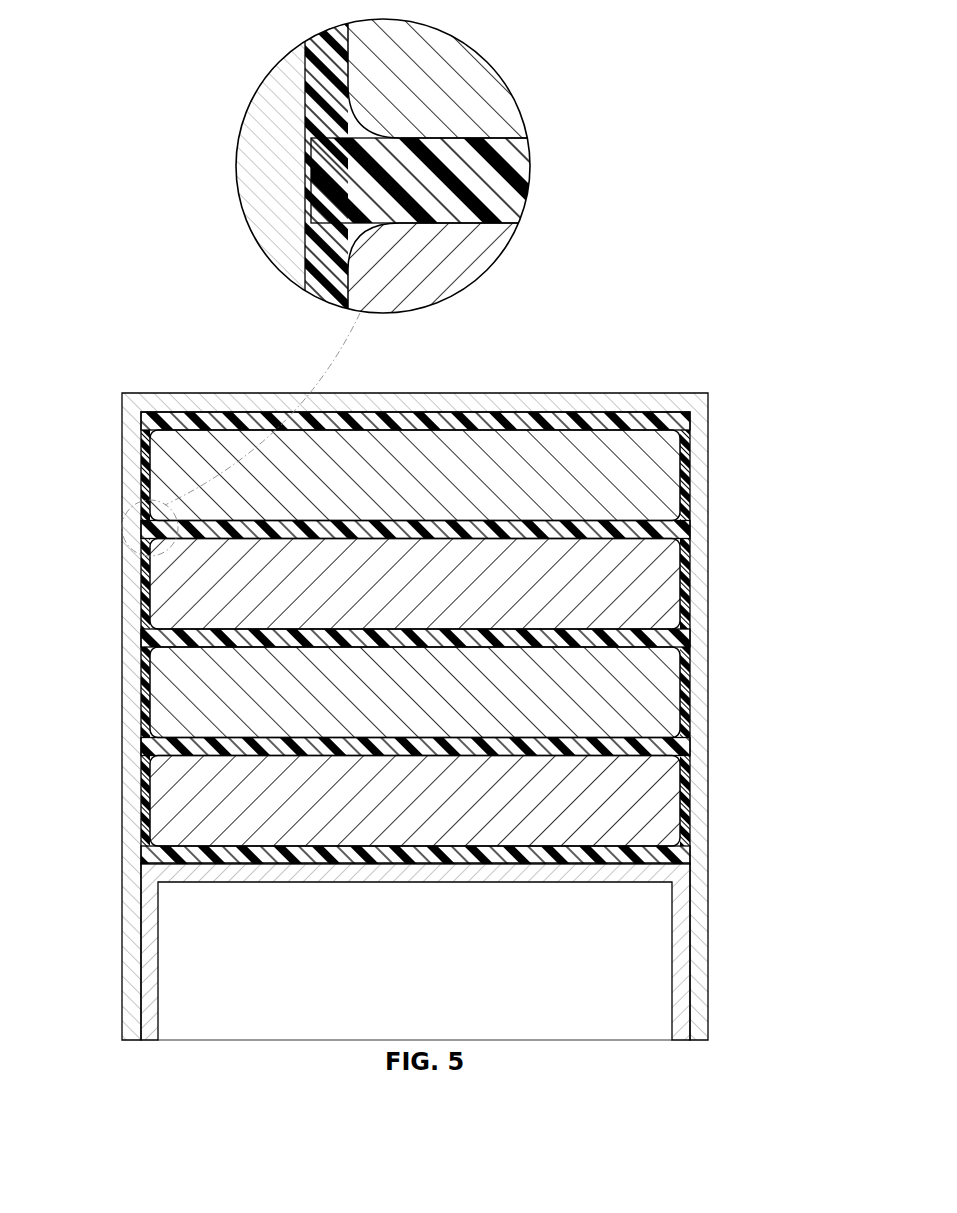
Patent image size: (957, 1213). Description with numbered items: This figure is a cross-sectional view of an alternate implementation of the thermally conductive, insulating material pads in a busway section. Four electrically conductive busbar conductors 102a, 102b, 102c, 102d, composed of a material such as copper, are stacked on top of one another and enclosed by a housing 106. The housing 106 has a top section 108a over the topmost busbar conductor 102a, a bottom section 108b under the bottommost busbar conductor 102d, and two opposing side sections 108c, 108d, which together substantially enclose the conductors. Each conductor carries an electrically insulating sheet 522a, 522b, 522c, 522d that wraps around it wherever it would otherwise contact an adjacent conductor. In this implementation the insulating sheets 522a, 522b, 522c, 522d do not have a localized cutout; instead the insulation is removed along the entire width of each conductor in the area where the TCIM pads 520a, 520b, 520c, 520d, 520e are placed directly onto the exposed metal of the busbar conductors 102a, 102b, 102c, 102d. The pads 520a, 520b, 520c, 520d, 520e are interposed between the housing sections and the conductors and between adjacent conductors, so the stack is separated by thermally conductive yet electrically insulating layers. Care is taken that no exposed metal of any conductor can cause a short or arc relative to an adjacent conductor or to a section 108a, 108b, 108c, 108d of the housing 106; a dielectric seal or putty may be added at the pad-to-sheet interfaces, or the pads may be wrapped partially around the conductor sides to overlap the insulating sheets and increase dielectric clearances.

The housing 106 is at (708, 393).
The top section 108a is at (235, 405).
The bottom section 108b is at (222, 880).
The side section 108c is at (708, 1027).
The side section 108d is at (122, 1027).
The busbar conductor 102a is at (655, 484).
The busbar conductor 102b is at (655, 592).
The busbar conductor 102c is at (655, 700).
The busbar conductor 102d is at (655, 815).
The TCIM pad 520a is at (690, 418).
The TCIM pad 520b is at (690, 527).
The TCIM pad 520c is at (690, 635).
The TCIM pad 520d is at (690, 744).
The TCIM pad 520e is at (672, 856).
The insulating sheet 522a is at (688, 470).
The insulating sheet 522b is at (688, 578).
The insulating sheet 522c is at (688, 686).
The insulating sheet 522d is at (688, 795).